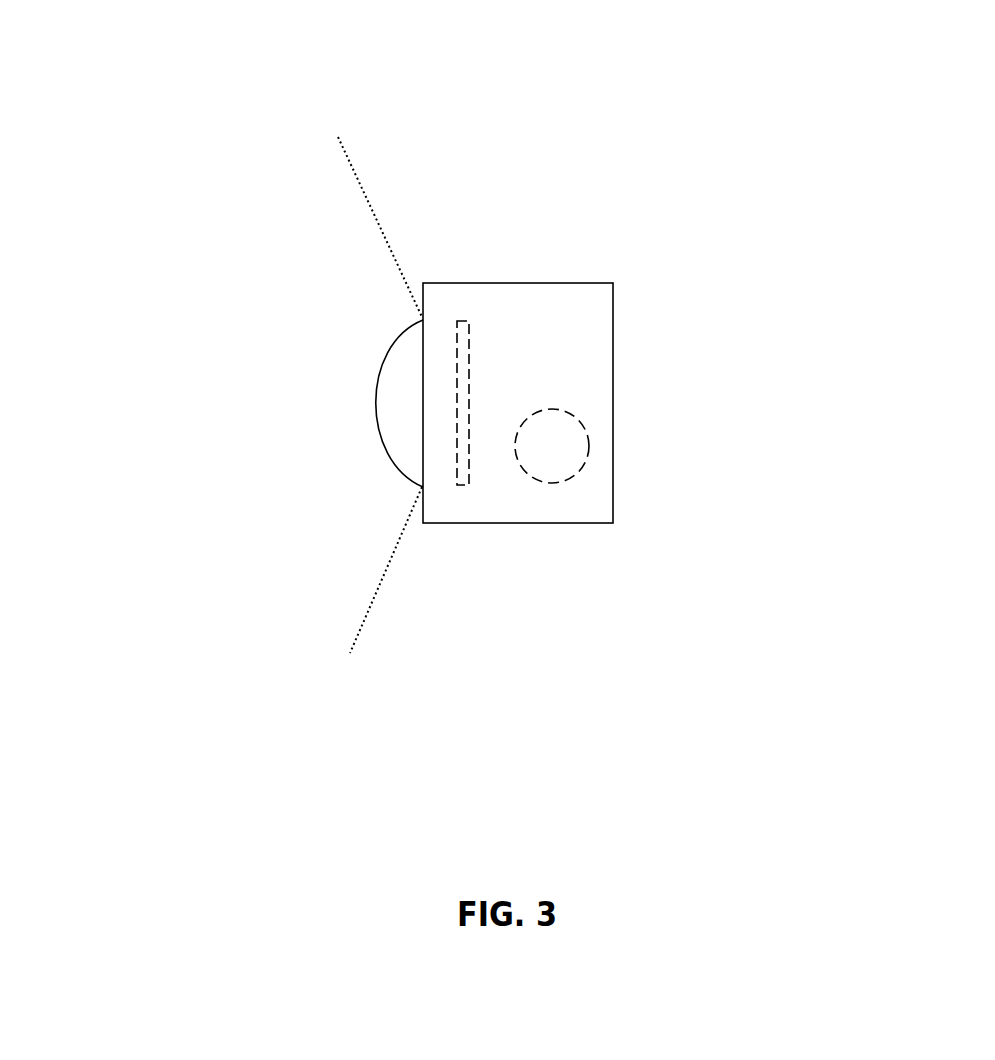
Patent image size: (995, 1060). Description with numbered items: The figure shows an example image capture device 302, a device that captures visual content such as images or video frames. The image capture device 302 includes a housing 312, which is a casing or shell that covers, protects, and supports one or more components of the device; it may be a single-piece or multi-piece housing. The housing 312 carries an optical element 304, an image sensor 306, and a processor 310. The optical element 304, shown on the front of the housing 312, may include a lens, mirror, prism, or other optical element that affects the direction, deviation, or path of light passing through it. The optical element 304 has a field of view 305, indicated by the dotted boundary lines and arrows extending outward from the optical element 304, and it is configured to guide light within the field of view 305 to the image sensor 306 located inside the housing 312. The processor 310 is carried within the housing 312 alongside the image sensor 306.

The image capture device 302 is at (579, 145).
The optical element 304 is at (399, 472).
The field of view 305 is at (392, 272).
The image sensor 306 is at (467, 318).
The processor 310 is at (590, 447).
The housing 312 is at (529, 523).